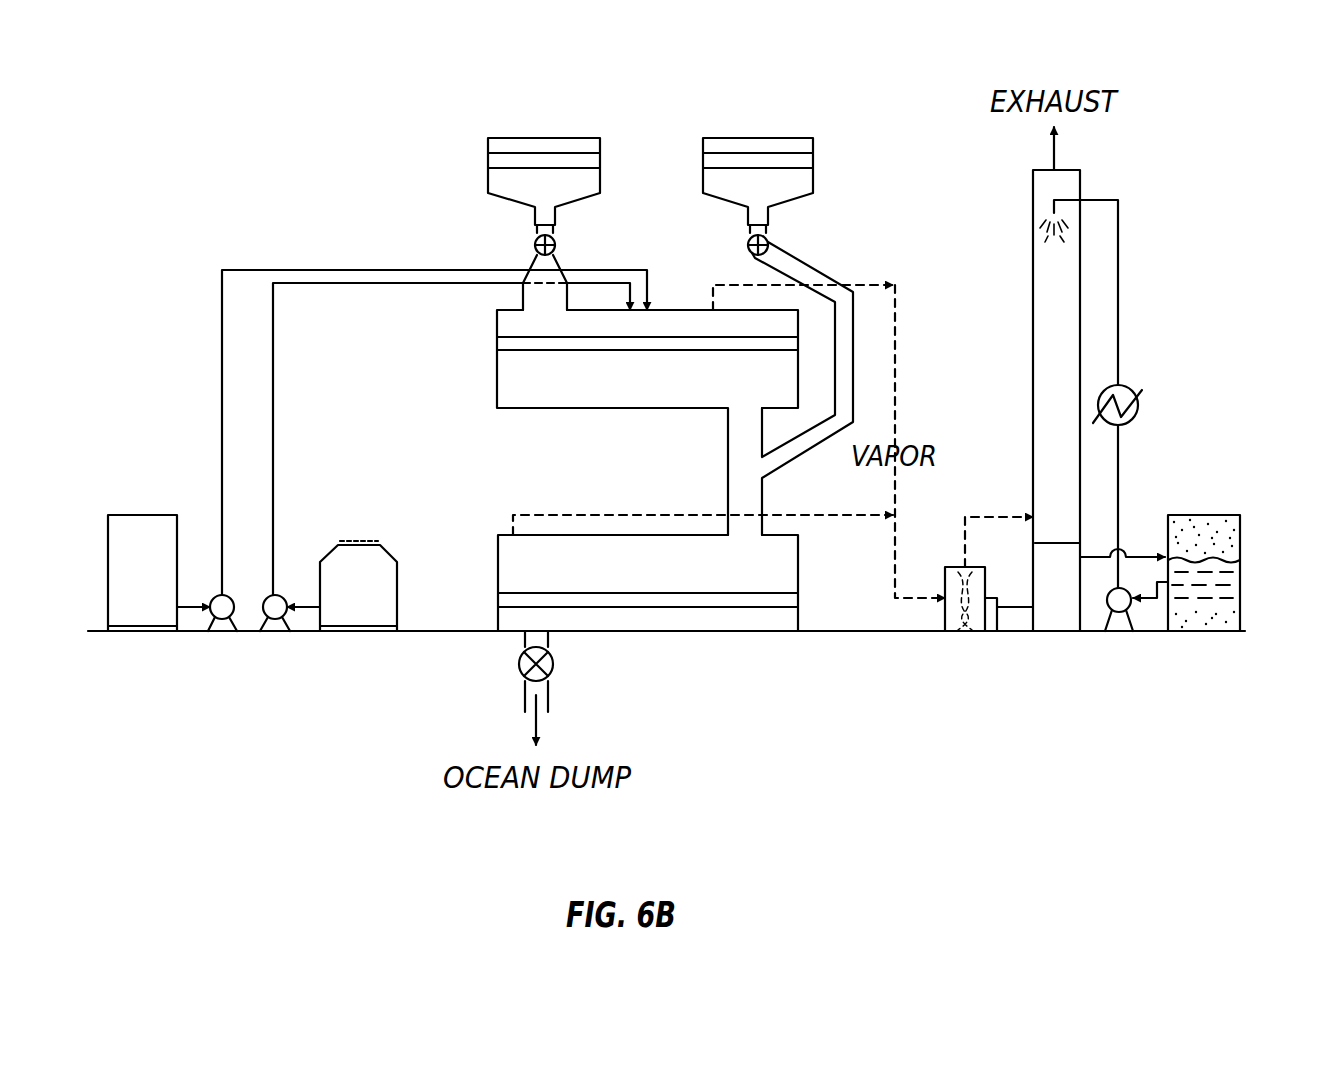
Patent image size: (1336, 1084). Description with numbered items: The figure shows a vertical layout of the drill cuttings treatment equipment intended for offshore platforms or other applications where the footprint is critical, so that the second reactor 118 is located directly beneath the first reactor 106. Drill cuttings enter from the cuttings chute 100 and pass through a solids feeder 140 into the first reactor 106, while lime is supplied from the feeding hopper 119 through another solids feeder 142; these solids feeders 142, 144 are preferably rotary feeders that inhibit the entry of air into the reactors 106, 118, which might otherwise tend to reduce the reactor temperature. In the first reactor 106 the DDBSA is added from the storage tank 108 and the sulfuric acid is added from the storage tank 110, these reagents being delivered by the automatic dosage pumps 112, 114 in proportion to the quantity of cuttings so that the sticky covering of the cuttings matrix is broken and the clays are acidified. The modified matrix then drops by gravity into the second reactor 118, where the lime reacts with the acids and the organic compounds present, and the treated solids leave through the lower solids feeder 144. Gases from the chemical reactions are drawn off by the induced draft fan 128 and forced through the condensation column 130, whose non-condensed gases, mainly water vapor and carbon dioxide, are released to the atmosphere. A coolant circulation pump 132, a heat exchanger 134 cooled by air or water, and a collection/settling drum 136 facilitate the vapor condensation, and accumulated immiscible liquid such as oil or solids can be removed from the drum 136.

The cuttings chute 100 is at (490, 152).
The feeding hopper 119 is at (814, 150).
The feed valve 140 is at (556, 237).
The solids feeder 142 is at (769, 238).
The first reactor 106 is at (675, 395).
The second reactor 118 is at (675, 582).
The storage tank 110 is at (170, 587).
The storage tank 108 is at (385, 600).
The automatic dosage pump 114 is at (222, 637).
The automatic dosage pump 112 is at (272, 637).
The solids feeder 144 is at (553, 663).
The induced draft fan 128 is at (965, 632).
The condensation column 130 is at (1033, 285).
The coolant circulation pump 132 is at (1122, 632).
The heat exchanger 134 is at (1138, 398).
The collection/settling drum 136 is at (1207, 515).